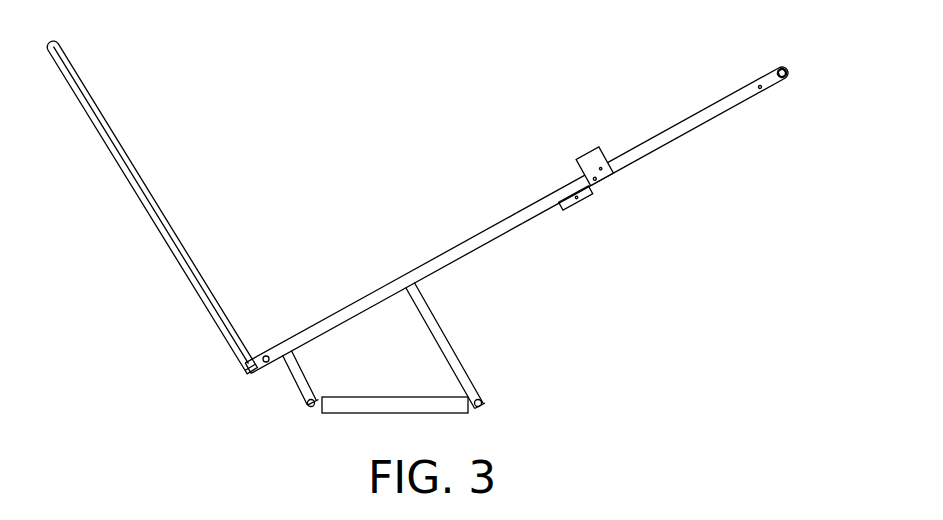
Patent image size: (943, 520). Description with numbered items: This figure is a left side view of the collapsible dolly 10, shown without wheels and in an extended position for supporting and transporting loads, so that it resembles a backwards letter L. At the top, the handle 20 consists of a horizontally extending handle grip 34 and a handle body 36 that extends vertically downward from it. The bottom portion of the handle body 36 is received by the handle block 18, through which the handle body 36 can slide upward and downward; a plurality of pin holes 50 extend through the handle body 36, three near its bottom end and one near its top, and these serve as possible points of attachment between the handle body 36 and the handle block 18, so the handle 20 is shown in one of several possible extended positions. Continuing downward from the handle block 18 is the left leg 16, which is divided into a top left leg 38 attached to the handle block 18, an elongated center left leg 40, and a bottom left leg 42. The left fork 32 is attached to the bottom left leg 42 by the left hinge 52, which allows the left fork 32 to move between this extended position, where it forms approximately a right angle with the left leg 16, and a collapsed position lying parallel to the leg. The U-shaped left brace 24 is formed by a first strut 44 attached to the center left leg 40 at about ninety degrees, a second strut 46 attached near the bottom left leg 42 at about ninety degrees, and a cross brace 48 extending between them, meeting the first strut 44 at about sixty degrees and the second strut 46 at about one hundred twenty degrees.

The collapsible dolly 10 is at (475, 258).
The left leg 16 is at (554, 258).
The handle block 18 is at (594, 158).
The handle 20 is at (663, 88).
The left brace 24 is at (395, 350).
The left fork 32 is at (152, 195).
The handle grip 34 is at (786, 68).
The handle body 36 is at (700, 127).
The top left leg 38 is at (550, 181).
The center left leg 40 is at (418, 266).
The bottom left leg 42 is at (315, 323).
The first strut 44 is at (442, 338).
The second strut 46 is at (287, 371).
The cross brace 48 is at (360, 402).
The pin holes 50 is at (765, 88).
The left hinge 52 is at (252, 362).